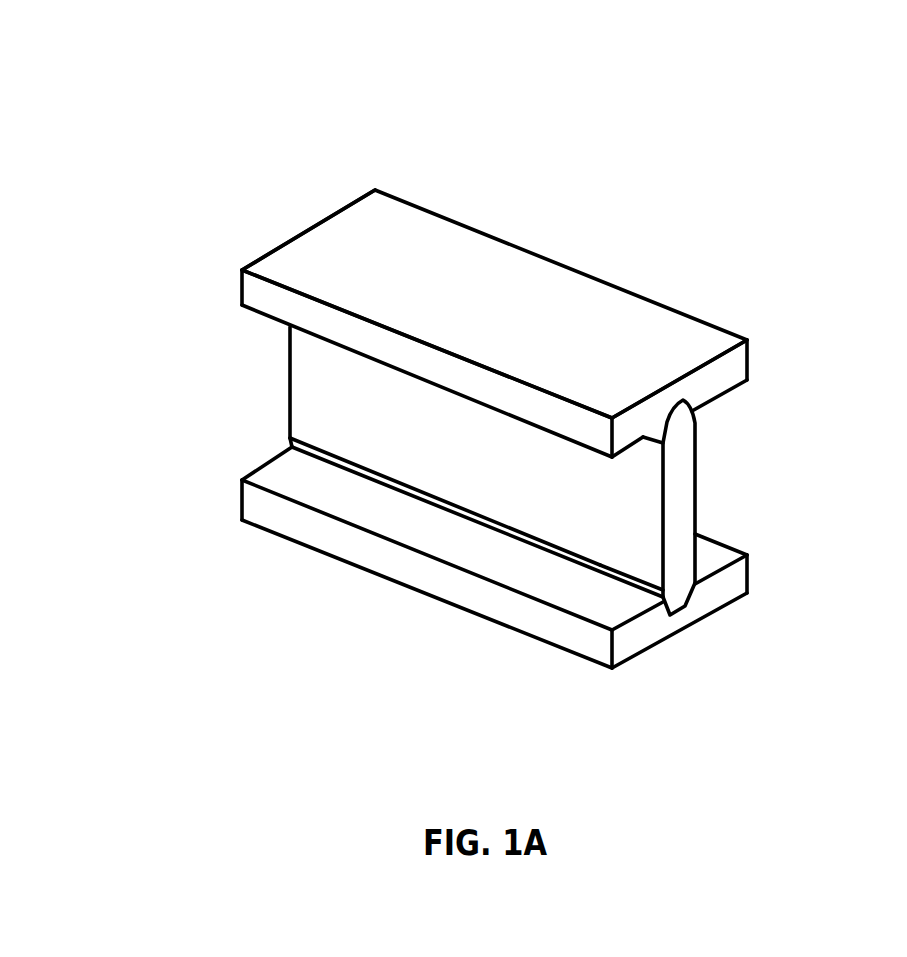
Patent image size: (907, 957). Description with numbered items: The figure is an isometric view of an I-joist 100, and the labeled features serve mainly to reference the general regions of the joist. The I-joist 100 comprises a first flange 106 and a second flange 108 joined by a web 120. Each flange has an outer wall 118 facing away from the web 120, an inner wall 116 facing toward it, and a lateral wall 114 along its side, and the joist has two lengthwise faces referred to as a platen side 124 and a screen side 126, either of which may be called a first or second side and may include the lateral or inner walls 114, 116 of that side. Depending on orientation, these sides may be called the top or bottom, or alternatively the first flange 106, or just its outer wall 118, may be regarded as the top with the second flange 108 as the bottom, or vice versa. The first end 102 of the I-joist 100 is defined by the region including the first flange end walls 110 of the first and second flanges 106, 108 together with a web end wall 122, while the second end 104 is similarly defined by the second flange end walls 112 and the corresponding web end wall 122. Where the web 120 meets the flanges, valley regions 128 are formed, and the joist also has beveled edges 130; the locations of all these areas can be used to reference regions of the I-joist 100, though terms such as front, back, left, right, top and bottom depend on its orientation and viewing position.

The I-joist 100 is at (724, 139).
The first end 102 is at (824, 493).
The second end 104 is at (245, 400).
The first flange 106 is at (594, 304).
The second flange 108 is at (533, 633).
The first flange end wall 110 is at (742, 358).
The second flange end wall 112 is at (349, 204).
The lateral wall 114 is at (514, 246).
The inner wall 116 is at (503, 563).
The outer wall 118 is at (444, 293).
The web 120 is at (688, 596).
The web end wall 122 is at (687, 465).
The platen side 124 is at (432, 446).
The screen side 126 is at (696, 508).
The valley regions 128 is at (344, 472).
The beveled edges 130 is at (663, 600).